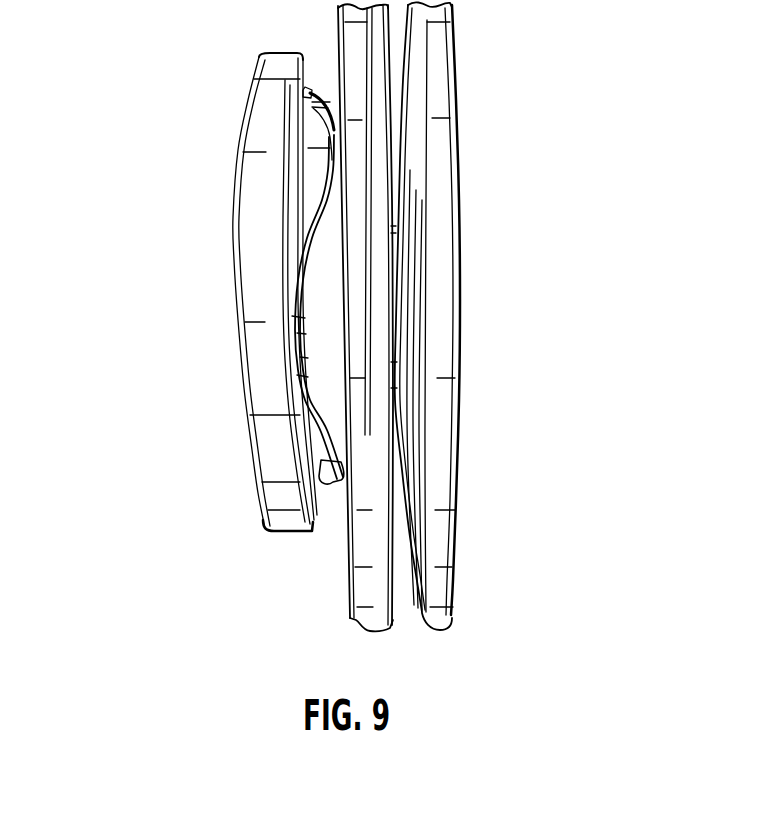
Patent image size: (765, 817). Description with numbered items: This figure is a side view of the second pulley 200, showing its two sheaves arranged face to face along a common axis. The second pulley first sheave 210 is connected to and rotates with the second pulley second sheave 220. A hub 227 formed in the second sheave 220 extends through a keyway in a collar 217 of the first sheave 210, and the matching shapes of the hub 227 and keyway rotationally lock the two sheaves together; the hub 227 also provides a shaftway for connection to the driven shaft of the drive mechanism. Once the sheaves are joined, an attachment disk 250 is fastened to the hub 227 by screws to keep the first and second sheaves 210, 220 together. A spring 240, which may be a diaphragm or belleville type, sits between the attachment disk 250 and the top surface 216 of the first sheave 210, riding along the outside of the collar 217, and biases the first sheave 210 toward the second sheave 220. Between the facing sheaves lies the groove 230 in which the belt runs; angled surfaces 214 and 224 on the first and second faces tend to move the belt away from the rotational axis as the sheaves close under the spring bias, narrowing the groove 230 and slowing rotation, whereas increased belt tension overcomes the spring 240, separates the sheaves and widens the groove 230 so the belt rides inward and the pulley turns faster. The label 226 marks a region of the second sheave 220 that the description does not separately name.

The second pulley 200 is at (170, 124).
The second pulley first sheave 210 is at (363, 597).
The angled surface 214 is at (377, 418).
The top surface 216 is at (347, 552).
The collar 217 is at (320, 316).
The second pulley second sheave 220 is at (448, 550).
The angled surface 224 is at (418, 408).
The outer edge of second plate 226 is at (462, 498).
The hub 227 is at (393, 301).
The groove 230 is at (403, 608).
The spring 240 is at (320, 233).
The attachment disk 250 is at (257, 347).